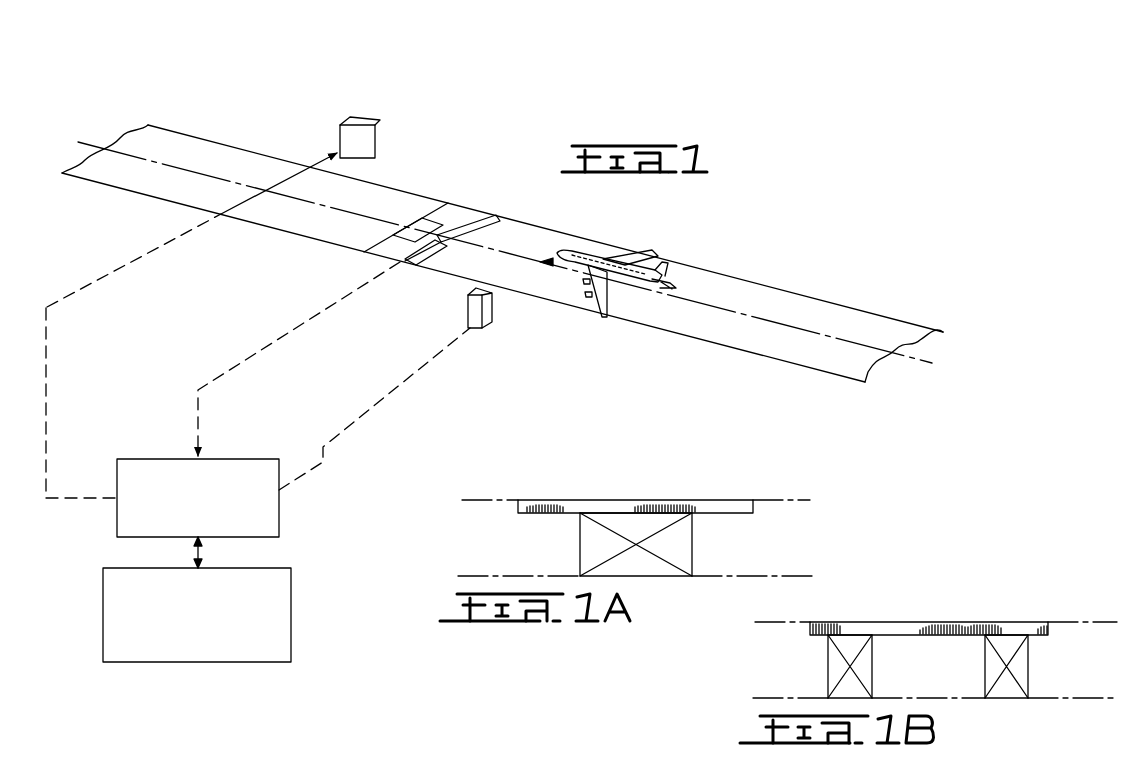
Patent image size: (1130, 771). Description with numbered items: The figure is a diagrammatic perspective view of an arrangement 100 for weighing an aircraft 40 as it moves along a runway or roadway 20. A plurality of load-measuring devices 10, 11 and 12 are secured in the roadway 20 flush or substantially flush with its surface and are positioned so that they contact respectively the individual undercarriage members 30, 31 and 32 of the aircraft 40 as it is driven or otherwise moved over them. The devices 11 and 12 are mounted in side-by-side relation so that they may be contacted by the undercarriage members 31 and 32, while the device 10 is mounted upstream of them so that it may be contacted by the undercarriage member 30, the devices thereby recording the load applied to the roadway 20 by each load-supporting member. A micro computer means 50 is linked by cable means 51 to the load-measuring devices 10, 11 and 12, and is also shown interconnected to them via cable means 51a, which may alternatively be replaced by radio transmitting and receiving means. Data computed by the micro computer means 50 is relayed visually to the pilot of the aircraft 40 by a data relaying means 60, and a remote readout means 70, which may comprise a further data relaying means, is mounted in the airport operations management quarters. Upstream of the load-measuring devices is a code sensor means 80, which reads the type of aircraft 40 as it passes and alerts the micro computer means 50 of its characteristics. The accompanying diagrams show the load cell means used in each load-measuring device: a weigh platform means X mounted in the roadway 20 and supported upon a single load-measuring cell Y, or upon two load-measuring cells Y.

In FIG. 1, the arrangement 100 is at (775, 263).
In FIG. 1, the load-measuring device 10 is at (425, 222).
In FIG. 1, the load-measuring device 11 is at (484, 222).
In FIG. 1, the load-measuring device 12 is at (410, 257).
In FIG. 1, the runway or roadway 20 is at (547, 238).
In FIG. 1A, the runway or roadway 20 is at (778, 500).
In FIG. 1B, the runway or roadway 20 is at (1093, 622).
In FIG. 1, the individual undercarriage member 30 is at (566, 265).
In FIG. 1, the individual undercarriage member 31 is at (640, 258).
In FIG. 1, the individual undercarriage member 32 is at (610, 292).
In FIG. 1, the aircraft 40 is at (658, 278).
In FIG. 1, the micro computer means 50 is at (263, 472).
In FIG. 1, the cable means 51 is at (277, 343).
In FIG. 1, the cable means 51a is at (377, 405).
In FIG. 1, the data relaying means 60 is at (377, 143).
In FIG. 1, the remote readout means 70 is at (282, 595).
In FIG. 1, the code sensor means 80 is at (470, 308).
In FIG. 1A, the weigh platform means X is at (632, 500).
In FIG. 1B, the weigh platform means X is at (893, 622).
In FIG. 1A, the load-measuring cell Y is at (692, 547).
In FIG. 1B, the load-measuring cell Y is at (872, 664).